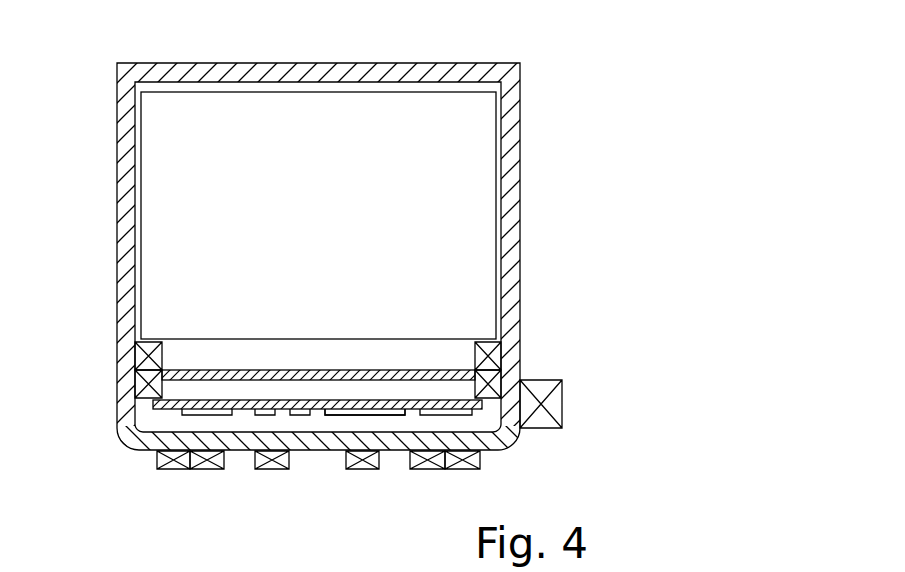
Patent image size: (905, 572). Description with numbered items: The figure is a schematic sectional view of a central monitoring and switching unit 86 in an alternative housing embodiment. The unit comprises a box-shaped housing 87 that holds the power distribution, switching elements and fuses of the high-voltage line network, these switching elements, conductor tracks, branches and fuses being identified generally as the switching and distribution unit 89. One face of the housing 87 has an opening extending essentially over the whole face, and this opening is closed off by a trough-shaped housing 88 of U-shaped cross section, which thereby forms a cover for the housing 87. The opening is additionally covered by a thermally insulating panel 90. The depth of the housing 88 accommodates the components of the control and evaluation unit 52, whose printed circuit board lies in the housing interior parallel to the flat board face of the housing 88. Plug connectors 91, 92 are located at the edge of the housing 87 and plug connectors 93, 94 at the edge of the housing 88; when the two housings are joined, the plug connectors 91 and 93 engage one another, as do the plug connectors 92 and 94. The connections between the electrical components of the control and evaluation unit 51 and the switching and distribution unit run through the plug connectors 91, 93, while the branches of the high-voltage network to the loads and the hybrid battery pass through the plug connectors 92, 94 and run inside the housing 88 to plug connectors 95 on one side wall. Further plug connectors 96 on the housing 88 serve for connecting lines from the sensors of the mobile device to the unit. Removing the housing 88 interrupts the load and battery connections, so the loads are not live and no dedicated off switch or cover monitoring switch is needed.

The central monitoring and switching unit 86 is at (274, 265).
The housing 87 is at (472, 73).
The housing 88 is at (242, 450).
The switching and distribution unit 89 is at (297, 217).
The thermally insulating panel 90 is at (275, 373).
The plug connector 91 is at (145, 350).
The plug connector 92 is at (497, 353).
The plug connector 93 is at (145, 384).
The plug connector 94 is at (487, 390).
The plug connectors 95 is at (553, 403).
The plug connectors 96 is at (174, 469).
The control and evaluation unit 51 is at (320, 409).
The control and evaluation unit 52 is at (406, 425).